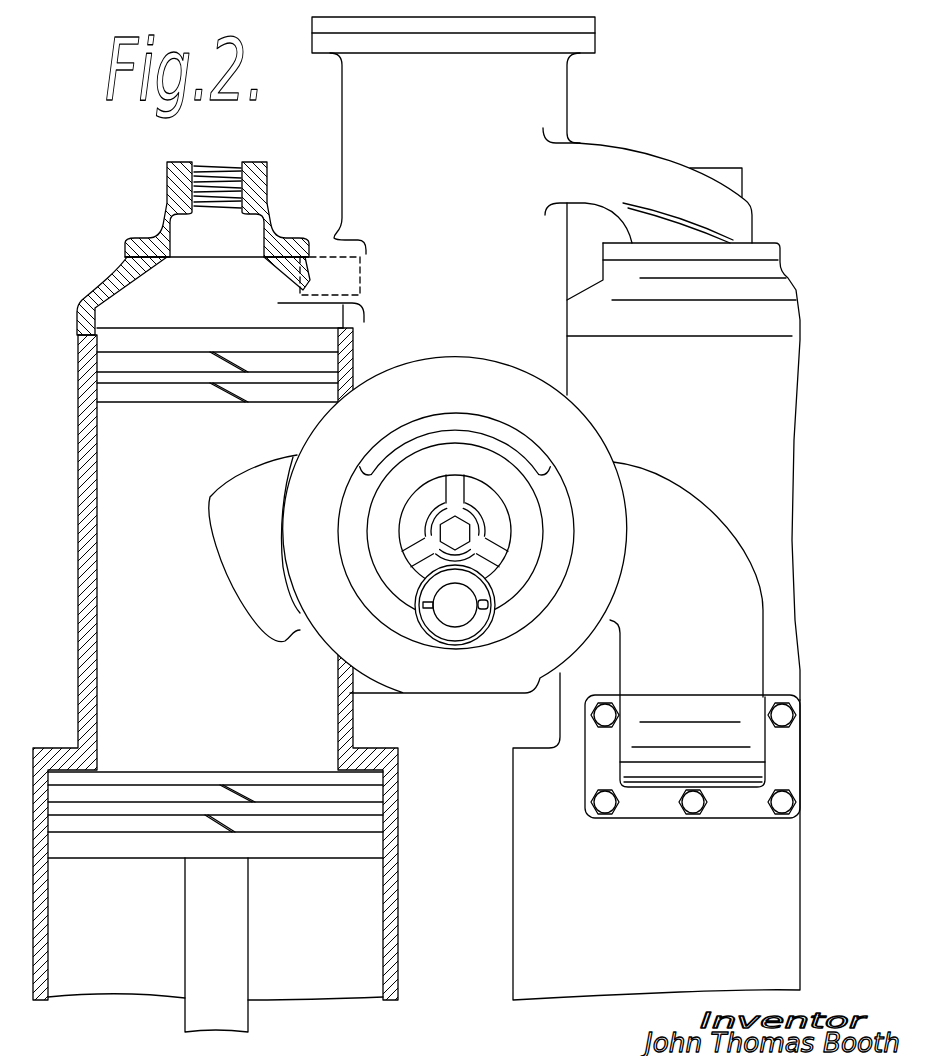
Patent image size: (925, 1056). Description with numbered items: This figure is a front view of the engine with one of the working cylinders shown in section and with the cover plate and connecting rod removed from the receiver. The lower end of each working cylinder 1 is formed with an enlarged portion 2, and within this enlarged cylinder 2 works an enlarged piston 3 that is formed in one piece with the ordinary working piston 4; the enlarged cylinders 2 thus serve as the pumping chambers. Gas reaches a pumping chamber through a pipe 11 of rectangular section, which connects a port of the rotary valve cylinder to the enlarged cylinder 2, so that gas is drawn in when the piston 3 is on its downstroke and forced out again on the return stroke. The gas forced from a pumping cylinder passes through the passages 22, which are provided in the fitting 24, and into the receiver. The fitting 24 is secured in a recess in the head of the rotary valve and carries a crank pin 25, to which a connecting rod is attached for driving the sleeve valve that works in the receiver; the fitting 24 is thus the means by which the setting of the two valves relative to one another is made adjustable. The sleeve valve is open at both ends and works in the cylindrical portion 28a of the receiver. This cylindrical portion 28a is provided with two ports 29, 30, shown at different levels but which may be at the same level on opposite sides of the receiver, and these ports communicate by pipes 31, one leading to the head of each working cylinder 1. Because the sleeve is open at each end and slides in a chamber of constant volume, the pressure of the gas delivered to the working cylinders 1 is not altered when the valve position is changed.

The working cylinder 1 is at (672, 451).
The enlarged portion 2 is at (390, 915).
The enlarged piston 3 is at (150, 835).
The working piston 4 is at (188, 664).
The pipe 11 is at (262, 540).
The passage 22 is at (478, 503).
The fitting 24 is at (458, 463).
The crank pin 25 is at (455, 613).
The cylindrical portion 28a is at (385, 128).
The port 29 is at (548, 162).
The port 30 is at (357, 270).
The pipe 31 is at (315, 275).